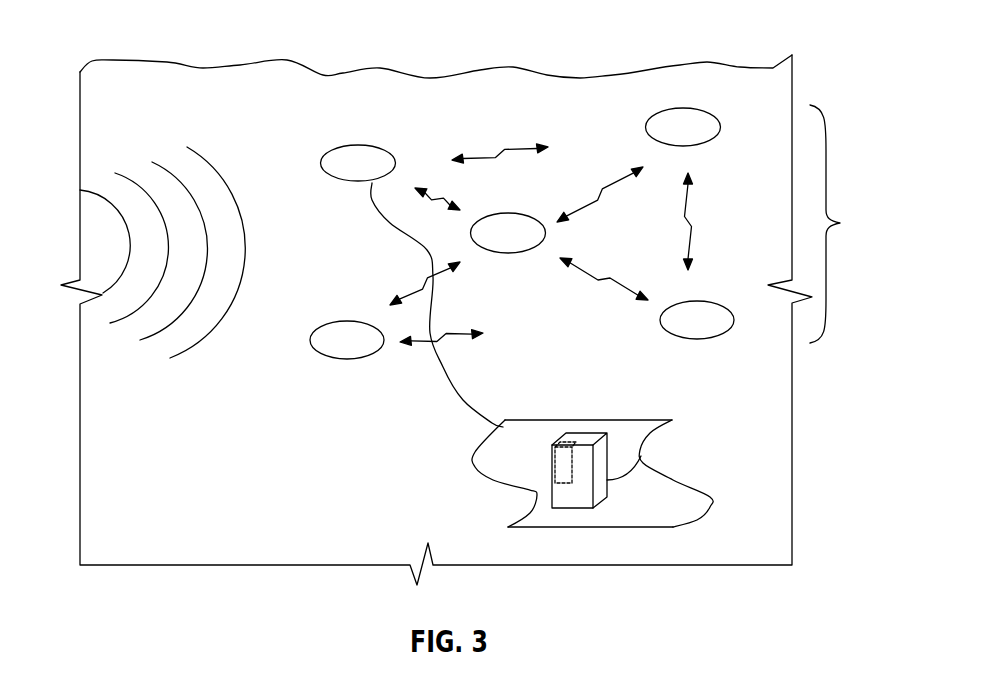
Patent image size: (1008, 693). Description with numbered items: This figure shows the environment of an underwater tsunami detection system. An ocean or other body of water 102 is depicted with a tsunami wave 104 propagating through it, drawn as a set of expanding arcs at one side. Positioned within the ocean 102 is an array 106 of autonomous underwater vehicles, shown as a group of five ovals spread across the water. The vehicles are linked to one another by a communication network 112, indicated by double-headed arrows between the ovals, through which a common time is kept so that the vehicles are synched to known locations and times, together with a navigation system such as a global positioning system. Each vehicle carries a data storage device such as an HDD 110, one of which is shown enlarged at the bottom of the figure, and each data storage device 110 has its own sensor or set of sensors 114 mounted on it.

The ocean or other body of water 102 is at (525, 97).
The tsunami wave 104 is at (208, 160).
The array of AUVs 106 is at (848, 224).
The data storage device (HDD) 110 is at (641, 456).
The communication network 112 is at (688, 222).
The sensor or set of sensors 114 is at (571, 444).